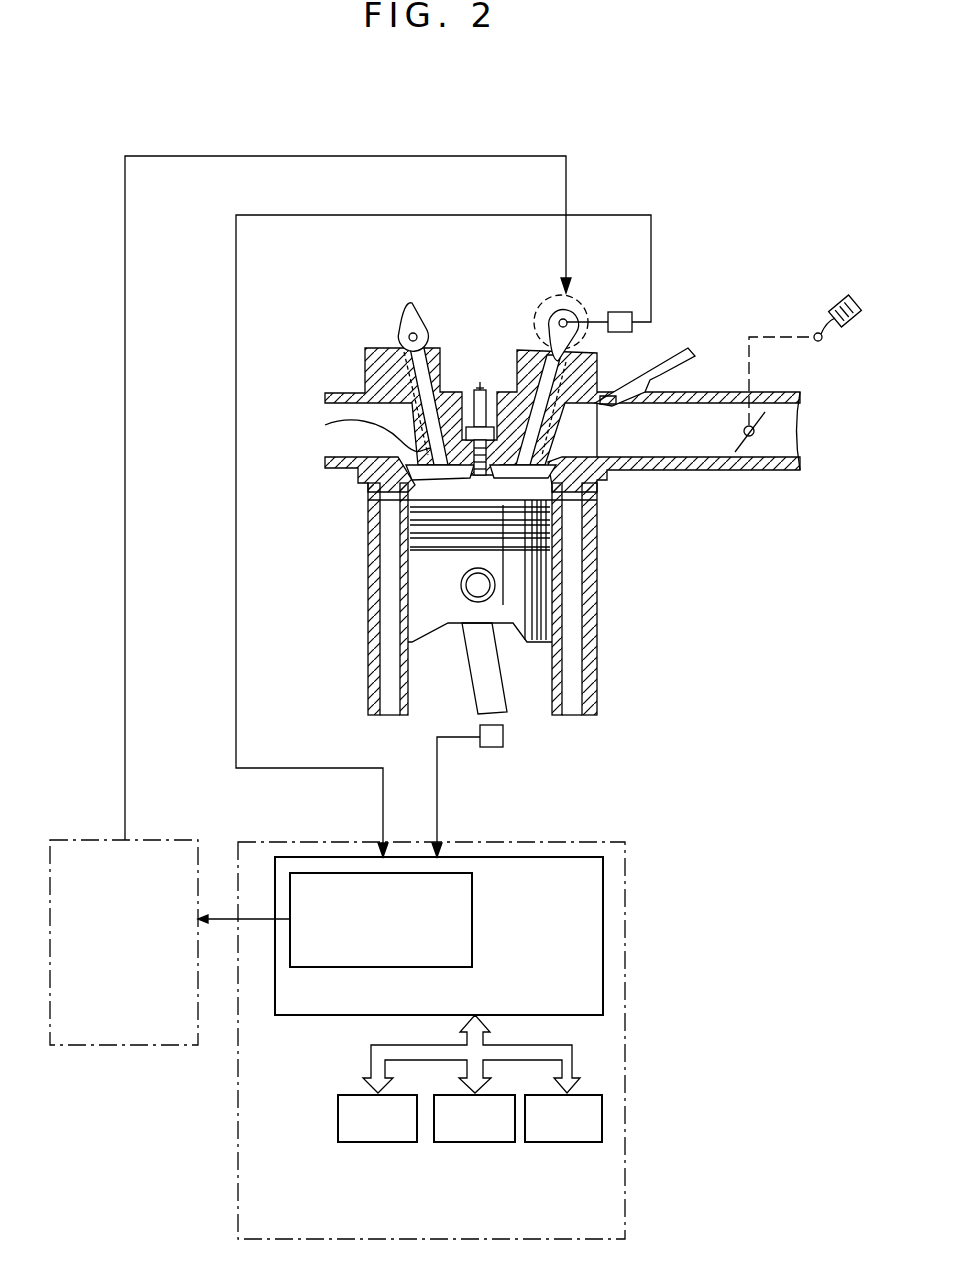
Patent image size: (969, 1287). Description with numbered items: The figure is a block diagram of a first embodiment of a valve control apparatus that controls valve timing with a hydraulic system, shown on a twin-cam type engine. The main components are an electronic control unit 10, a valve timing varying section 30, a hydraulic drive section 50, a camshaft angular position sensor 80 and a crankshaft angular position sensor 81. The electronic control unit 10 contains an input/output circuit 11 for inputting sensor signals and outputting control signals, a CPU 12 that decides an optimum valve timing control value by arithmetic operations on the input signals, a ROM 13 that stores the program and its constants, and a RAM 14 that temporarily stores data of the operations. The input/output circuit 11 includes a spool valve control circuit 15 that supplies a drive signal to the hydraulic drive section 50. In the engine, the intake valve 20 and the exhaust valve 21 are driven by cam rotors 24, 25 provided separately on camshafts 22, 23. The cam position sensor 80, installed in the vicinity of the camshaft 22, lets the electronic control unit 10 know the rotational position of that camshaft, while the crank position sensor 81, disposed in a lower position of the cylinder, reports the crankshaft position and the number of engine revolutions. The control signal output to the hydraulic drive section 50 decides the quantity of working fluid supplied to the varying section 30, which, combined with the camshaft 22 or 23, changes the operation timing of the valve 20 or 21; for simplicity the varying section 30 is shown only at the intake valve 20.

The electronic control unit 10 is at (625, 1062).
The input/output circuit 11 is at (603, 892).
The CPU 12 is at (537, 1143).
The ROM 13 is at (448, 1143).
The RAM 14 is at (350, 1143).
The spool valve control circuit 15 is at (340, 873).
The intake valve 20 is at (497, 397).
The exhaust valve 21 is at (327, 428).
The camshaft 22 is at (588, 318).
The camshaft 23 is at (397, 332).
The cam rotor 24 is at (551, 312).
The cam rotor 25 is at (421, 325).
The valve timing varying section 30 is at (588, 296).
The hydraulic drive section 50 is at (83, 838).
The camshaft angular position sensor 80 is at (627, 347).
The crankshaft angular position sensor 81 is at (503, 737).